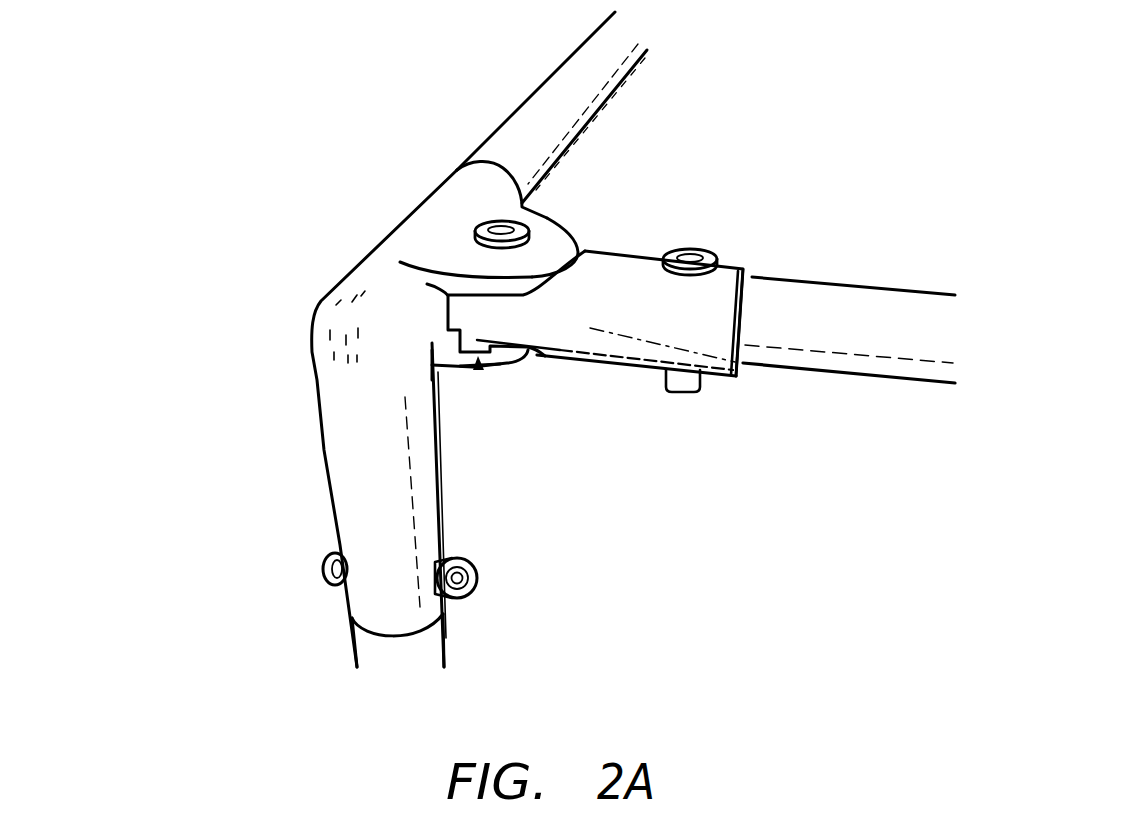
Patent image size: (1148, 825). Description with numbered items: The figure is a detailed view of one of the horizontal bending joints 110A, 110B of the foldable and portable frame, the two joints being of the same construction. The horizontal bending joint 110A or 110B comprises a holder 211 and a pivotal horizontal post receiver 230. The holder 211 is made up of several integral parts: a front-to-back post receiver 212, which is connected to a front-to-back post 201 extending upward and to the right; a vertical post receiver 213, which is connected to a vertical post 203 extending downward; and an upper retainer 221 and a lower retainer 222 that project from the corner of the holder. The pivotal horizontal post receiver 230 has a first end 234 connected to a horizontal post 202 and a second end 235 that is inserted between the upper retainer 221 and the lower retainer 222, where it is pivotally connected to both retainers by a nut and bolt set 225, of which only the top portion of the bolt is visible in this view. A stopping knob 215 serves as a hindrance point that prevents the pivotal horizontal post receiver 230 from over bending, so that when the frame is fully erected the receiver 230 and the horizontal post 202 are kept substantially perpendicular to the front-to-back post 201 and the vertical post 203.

The horizontal bending joint 110A is at (198, 52).
The horizontal bending joint 110B is at (91, 59).
The front-to-back post 201 is at (613, 72).
The horizontal post 202 is at (840, 316).
The vertical post 203 is at (362, 655).
The holder 211 is at (333, 313).
The front-to-back post receiver 212 is at (468, 177).
The vertical post receiver 213 is at (337, 458).
The stopping knob 215 is at (479, 369).
The upper retainer 221 is at (470, 267).
The lower retainer 222 is at (520, 368).
The nut & bolt set 225 is at (537, 230).
The pivotal horizontal post receiver 230 is at (605, 343).
The first end 234 is at (712, 350).
The second end 235 is at (503, 327).